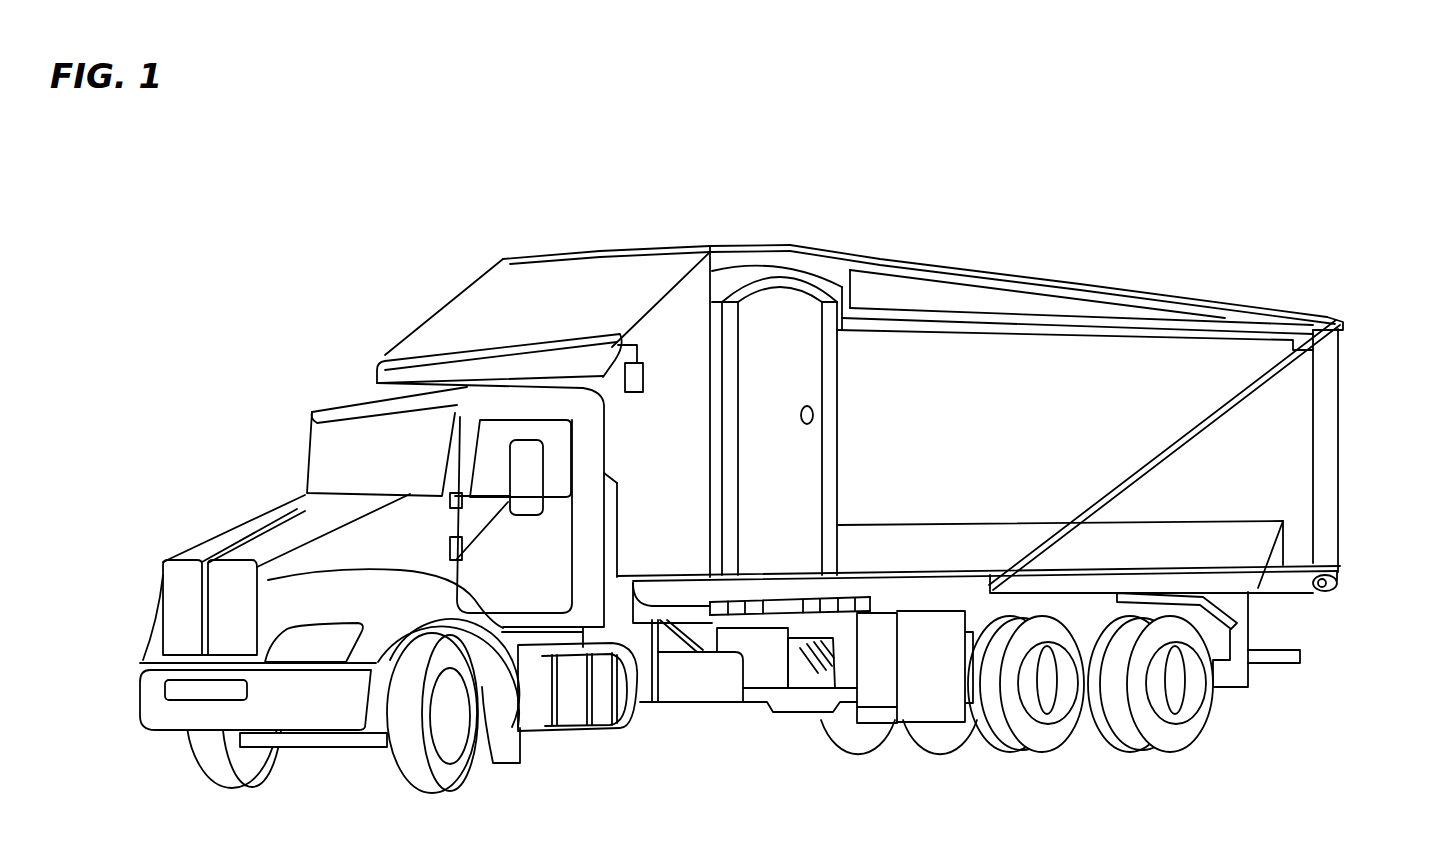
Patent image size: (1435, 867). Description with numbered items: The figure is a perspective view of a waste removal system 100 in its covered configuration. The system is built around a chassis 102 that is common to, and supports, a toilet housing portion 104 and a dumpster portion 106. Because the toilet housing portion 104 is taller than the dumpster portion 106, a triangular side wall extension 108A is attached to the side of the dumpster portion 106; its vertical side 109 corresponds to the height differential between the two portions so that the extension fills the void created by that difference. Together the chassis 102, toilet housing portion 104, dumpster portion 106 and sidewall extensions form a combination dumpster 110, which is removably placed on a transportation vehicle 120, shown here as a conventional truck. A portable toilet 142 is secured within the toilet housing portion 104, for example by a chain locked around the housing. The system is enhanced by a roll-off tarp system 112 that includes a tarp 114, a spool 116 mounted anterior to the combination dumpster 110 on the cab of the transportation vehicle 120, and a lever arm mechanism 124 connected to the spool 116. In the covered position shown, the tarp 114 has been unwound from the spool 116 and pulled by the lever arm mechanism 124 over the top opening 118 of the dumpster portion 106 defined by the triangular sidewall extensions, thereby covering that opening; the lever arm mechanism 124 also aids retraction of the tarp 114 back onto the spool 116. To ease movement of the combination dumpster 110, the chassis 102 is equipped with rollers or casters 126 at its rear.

The waste removal system 100 is at (248, 252).
The chassis 102 is at (772, 613).
The toilet housing portion 104 is at (683, 330).
The dumpster portion 106 is at (1074, 374).
The side wall extension 108A is at (934, 300).
The vertical side 109 is at (844, 295).
The combination dumpster 110 is at (1207, 382).
The roll-off tarp system 112 is at (547, 285).
The tarp 114 is at (597, 283).
The spool 116 is at (475, 363).
The top opening 118 is at (1032, 292).
The transportation vehicle 120 is at (288, 563).
The lever arm mechanism 124 is at (1112, 495).
The rollers or casters 126 is at (1303, 592).
The portable toilet 142 is at (777, 330).